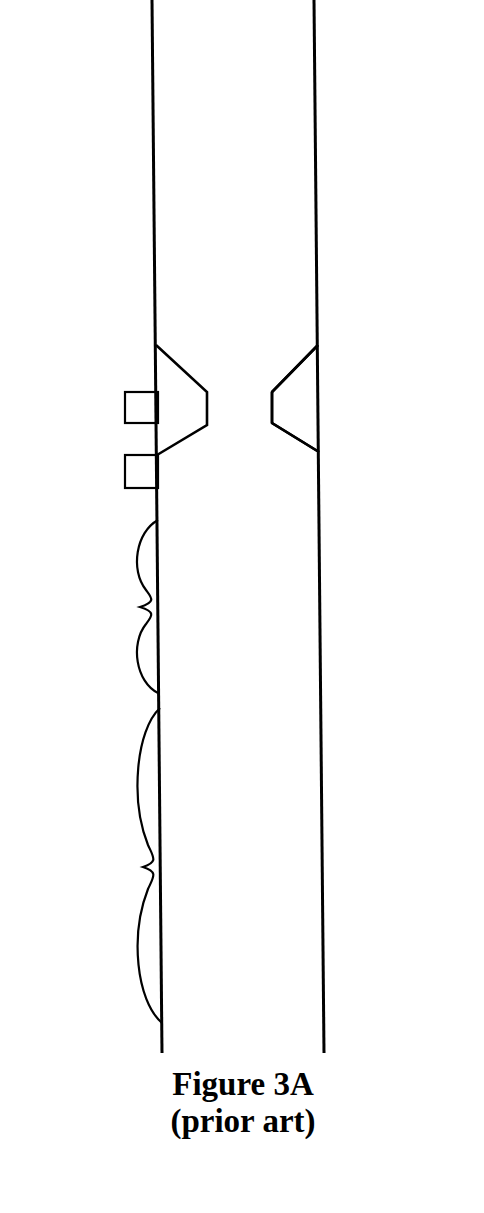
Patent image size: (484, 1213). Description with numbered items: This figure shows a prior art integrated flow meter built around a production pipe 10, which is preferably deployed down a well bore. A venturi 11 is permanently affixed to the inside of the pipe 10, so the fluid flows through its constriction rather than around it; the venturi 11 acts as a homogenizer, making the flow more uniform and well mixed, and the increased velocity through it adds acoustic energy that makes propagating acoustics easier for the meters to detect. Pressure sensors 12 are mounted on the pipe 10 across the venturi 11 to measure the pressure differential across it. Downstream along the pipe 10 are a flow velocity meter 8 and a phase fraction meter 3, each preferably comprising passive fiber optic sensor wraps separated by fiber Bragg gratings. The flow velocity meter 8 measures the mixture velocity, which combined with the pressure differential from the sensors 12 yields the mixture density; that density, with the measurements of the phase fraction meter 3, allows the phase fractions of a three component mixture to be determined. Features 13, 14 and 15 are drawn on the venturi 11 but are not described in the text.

The production pipe 10 is at (316, 150).
The venturi 11 is at (293, 423).
The pressure sensors 12 is at (127, 470).
The nozzle lower wall 13 is at (262, 438).
The nozzle opening 14 is at (237, 408).
The nozzle upper wall 15 is at (268, 360).
The flow velocity meter 8 is at (139, 606).
The phase fraction meter 3 is at (142, 865).